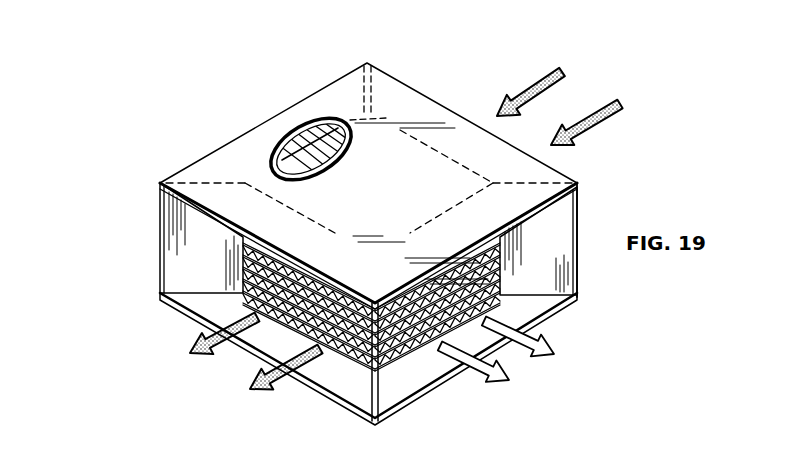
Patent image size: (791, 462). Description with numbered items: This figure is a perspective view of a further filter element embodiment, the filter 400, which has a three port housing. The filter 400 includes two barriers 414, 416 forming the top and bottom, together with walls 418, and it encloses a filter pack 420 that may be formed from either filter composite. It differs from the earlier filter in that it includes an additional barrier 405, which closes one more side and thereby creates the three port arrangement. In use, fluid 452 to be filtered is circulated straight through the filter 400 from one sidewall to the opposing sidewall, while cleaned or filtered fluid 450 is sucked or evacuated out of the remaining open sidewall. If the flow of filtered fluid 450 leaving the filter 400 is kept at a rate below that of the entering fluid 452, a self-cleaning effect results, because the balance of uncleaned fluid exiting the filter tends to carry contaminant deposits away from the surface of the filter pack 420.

The filter 400 is at (374, 228).
The additional barrier 405 is at (300, 150).
The barrier 414 is at (402, 197).
The barrier 416 is at (332, 377).
The walls 418 is at (387, 88).
The filter pack 420 is at (540, 235).
The filtered fluid 450 is at (487, 363).
The fluid to be filtered 452 is at (565, 85).